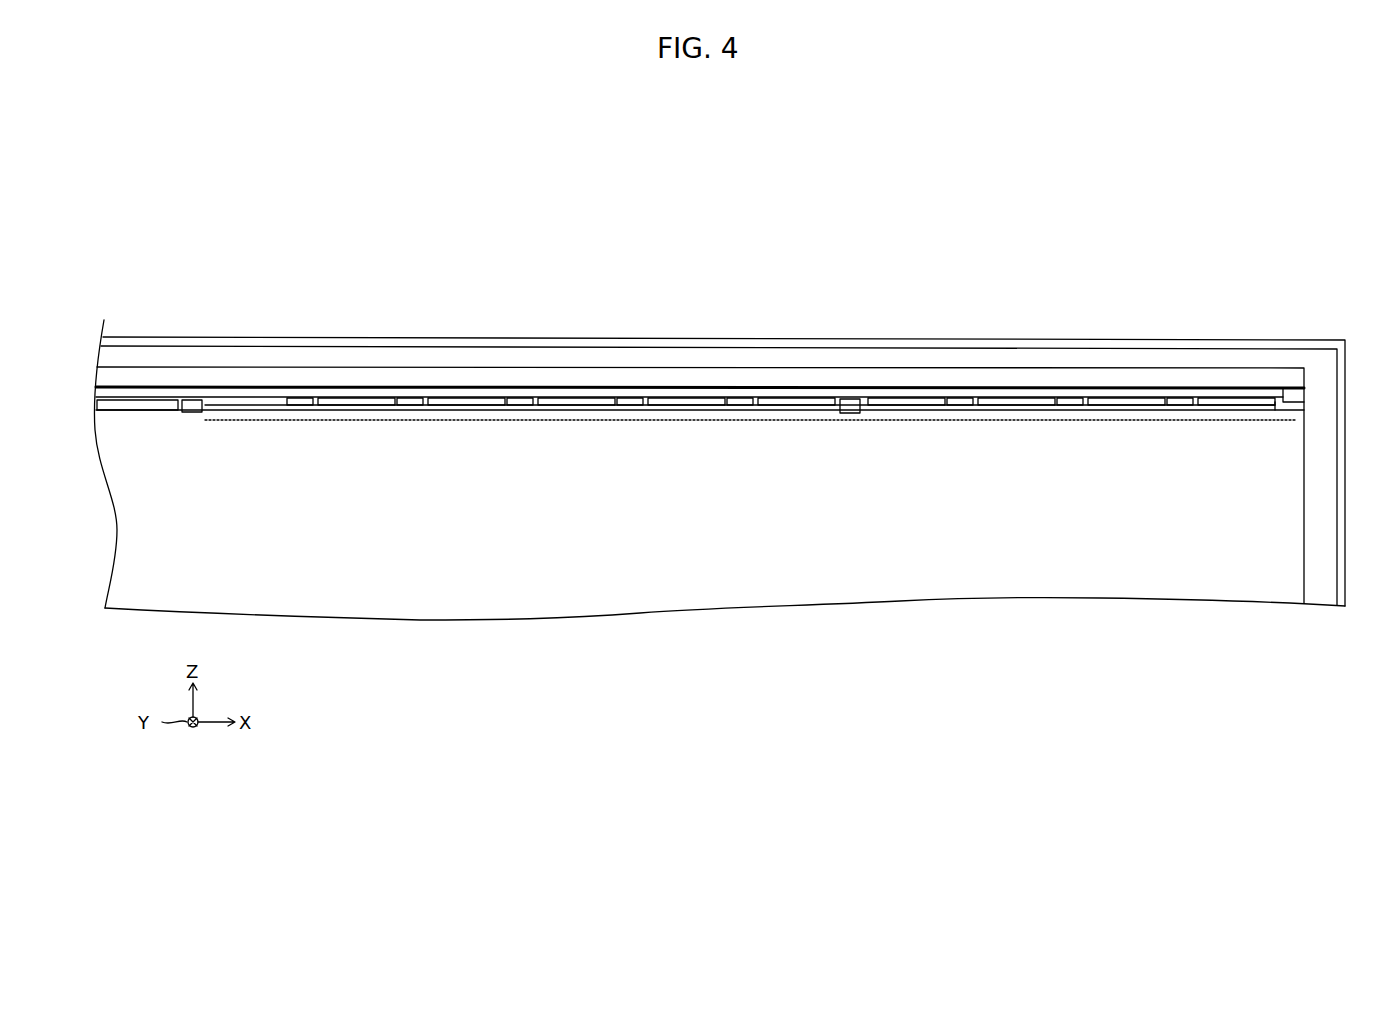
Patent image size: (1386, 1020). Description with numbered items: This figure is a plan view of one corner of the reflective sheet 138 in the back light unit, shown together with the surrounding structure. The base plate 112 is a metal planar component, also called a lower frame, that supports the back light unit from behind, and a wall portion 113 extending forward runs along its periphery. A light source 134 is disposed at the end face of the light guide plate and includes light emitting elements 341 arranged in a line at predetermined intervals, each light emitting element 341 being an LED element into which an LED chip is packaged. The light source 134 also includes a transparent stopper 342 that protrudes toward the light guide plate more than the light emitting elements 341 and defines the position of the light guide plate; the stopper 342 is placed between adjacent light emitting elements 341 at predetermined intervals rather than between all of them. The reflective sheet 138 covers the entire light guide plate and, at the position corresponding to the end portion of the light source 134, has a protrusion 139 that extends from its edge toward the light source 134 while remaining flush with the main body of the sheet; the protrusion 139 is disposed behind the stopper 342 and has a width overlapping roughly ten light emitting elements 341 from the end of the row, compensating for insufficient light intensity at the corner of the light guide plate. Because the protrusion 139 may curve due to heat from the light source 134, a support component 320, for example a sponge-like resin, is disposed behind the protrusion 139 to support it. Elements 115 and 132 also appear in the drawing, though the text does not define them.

The base plate 112 is at (1148, 339).
The wall portion 113 is at (927, 339).
The adhesive layer 115 is at (1070, 367).
The inner panel 132 is at (982, 367).
The light source 134 is at (1248, 395).
The reflective sheet 138 is at (904, 575).
The protrusion 139 is at (1182, 411).
The support component 320 is at (705, 423).
The light emitting element 341 is at (795, 418).
The stopper 342 is at (853, 414).